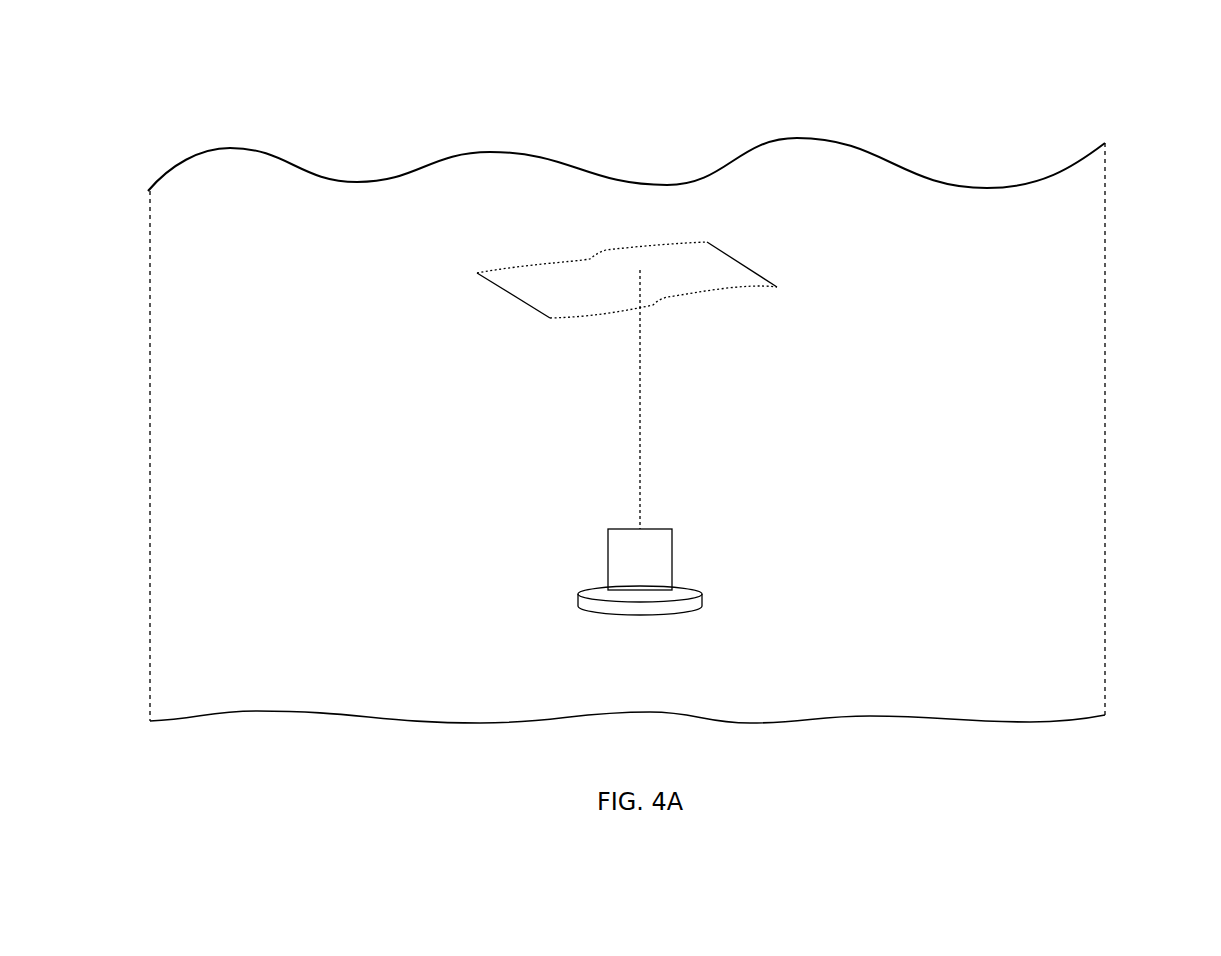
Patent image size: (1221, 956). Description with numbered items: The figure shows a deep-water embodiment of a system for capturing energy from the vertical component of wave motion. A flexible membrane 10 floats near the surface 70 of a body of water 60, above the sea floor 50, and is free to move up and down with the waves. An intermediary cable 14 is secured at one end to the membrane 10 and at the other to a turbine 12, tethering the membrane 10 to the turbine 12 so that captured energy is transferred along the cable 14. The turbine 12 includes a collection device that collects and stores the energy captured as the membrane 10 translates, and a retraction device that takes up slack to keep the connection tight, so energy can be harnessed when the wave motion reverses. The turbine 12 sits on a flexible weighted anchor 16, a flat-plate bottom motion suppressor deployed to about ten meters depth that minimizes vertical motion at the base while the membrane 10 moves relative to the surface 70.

The flexible membrane 10 is at (562, 287).
The turbine 12 is at (660, 550).
The intermediary cable 14 is at (640, 430).
The flexible weighted anchor 16 is at (577, 605).
The sea floor 50 is at (467, 715).
The body of water 60 is at (975, 340).
The surface 70 is at (365, 168).